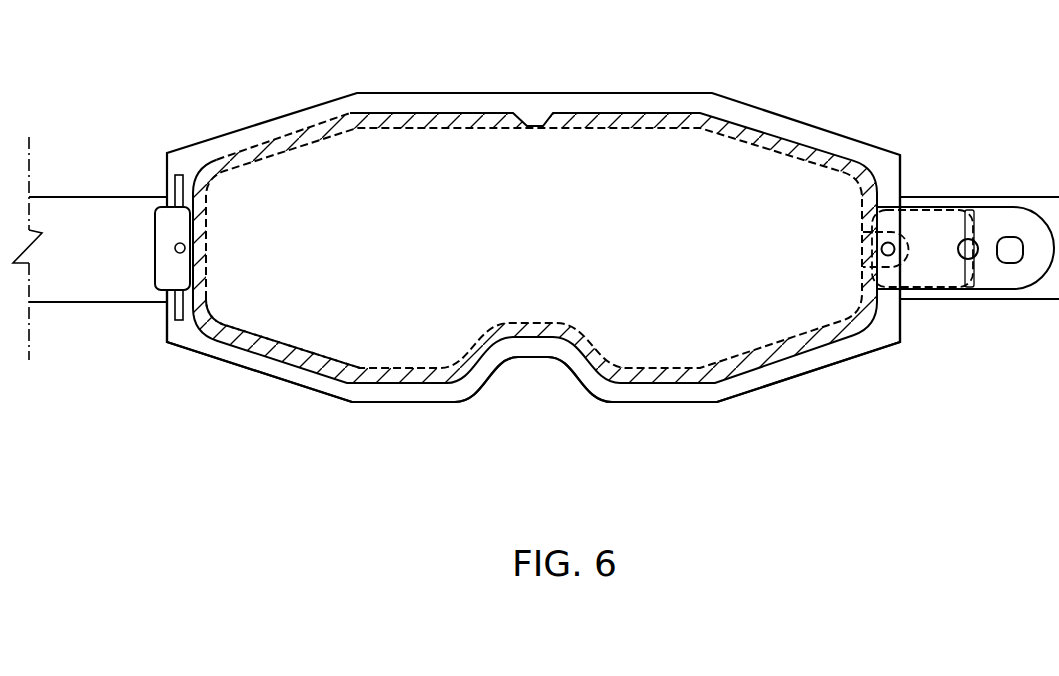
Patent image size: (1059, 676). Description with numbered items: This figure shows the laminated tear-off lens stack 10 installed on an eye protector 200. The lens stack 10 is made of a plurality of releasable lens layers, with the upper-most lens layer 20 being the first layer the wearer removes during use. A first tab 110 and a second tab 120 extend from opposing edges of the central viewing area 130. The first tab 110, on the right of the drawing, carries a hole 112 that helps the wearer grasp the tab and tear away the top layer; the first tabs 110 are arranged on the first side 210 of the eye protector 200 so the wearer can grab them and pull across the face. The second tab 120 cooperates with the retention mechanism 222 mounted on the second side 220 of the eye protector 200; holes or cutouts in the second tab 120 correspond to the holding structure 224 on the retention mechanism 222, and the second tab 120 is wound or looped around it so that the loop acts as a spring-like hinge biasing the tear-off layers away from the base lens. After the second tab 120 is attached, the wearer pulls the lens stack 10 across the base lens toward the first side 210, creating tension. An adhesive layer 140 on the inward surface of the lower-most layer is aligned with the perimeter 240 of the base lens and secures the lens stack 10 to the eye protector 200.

The laminated tear-off lens stack 10 is at (303, 137).
The upper-most lens layer 20 is at (387, 340).
The first tab 110 is at (992, 277).
The hole 112 is at (880, 247).
The second tab 120 is at (155, 250).
The central viewing area 130 is at (493, 185).
The adhesive layer 140 is at (677, 375).
The eye protector 200 is at (789, 127).
The first side of the eye protector 210 is at (890, 340).
The second side of the eye protector 220 is at (182, 340).
The retention mechanism 222 is at (168, 186).
The holding structure 224 is at (196, 253).
The perimeter of the base lens 240 is at (622, 102).